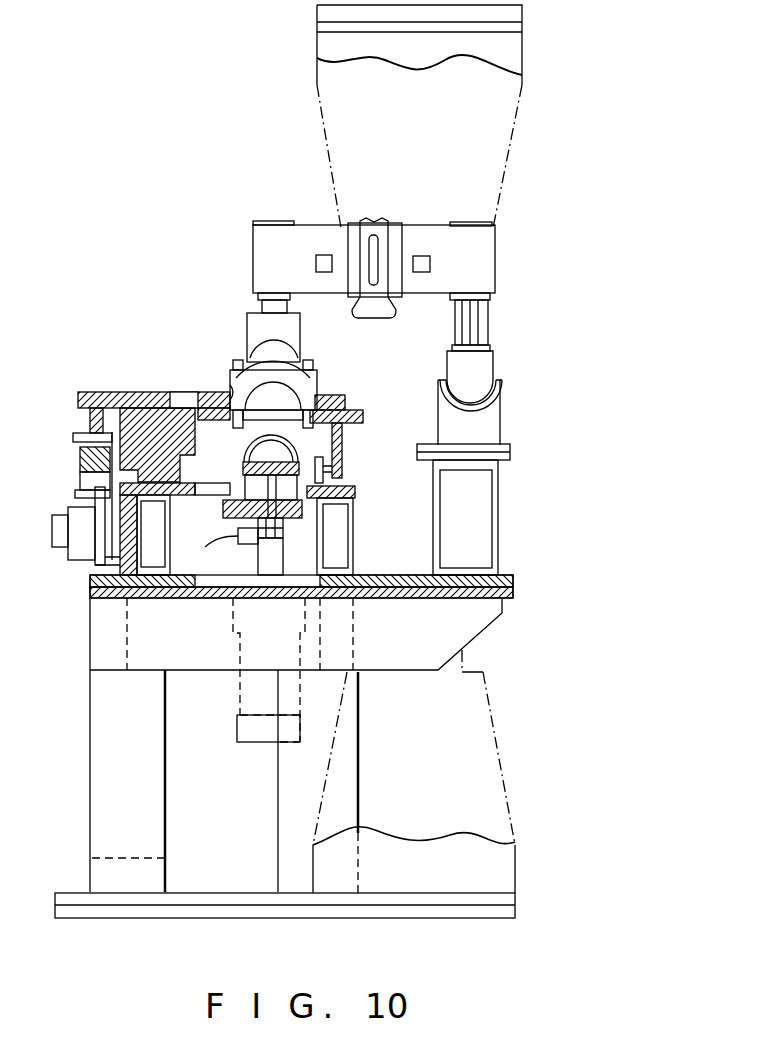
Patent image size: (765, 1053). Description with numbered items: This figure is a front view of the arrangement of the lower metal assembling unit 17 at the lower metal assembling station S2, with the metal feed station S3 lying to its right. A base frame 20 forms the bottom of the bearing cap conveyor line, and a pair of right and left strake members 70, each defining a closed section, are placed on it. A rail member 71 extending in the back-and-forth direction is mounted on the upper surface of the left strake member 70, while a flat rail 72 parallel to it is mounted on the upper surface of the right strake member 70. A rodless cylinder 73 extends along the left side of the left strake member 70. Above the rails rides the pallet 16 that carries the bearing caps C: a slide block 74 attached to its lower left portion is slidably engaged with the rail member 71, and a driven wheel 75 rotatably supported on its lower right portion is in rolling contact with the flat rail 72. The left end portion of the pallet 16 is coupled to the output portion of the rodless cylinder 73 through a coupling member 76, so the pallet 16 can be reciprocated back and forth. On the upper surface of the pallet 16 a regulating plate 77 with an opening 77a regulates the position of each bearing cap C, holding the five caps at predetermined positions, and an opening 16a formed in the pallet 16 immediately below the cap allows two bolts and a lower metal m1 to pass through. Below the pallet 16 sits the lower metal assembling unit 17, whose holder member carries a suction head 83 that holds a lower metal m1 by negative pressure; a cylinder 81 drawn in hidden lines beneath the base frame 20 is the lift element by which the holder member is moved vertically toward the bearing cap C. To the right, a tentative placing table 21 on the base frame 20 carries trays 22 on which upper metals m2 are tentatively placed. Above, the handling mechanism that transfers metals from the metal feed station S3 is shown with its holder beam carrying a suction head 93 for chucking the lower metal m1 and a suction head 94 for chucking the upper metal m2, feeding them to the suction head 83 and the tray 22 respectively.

The pallet 16 is at (358, 412).
The opening 16a is at (285, 412).
The lower metal assembling unit 17 is at (165, 617).
The base frame 20 is at (515, 590).
The tentative placing table 21 is at (500, 460).
The tray 22 is at (490, 430).
The strake member 70 is at (168, 545).
The rail member 71 is at (152, 407).
The flat rail 72 is at (354, 492).
The rodless cylinder 73 is at (63, 552).
The slide block 74 is at (130, 437).
The driven wheel 75 is at (335, 484).
The coupling member 76 is at (82, 478).
The regulating plate 77 is at (212, 400).
The opening 77a is at (228, 393).
The cylinder 81 is at (240, 692).
The suction head 83 is at (262, 456).
The suction head 93 is at (253, 325).
The suction head 94 is at (487, 368).
The lower metal m1 is at (343, 445).
The upper metal m2 is at (503, 391).
The bearing cap C is at (230, 395).
The lower metal assembling station S2 is at (124, 269).
The metal feed station S3 is at (396, 355).